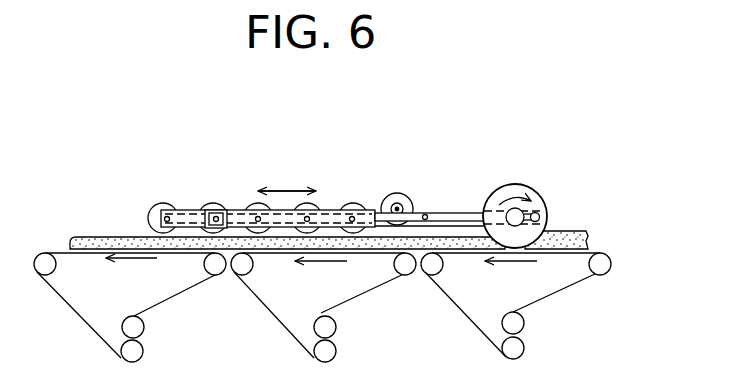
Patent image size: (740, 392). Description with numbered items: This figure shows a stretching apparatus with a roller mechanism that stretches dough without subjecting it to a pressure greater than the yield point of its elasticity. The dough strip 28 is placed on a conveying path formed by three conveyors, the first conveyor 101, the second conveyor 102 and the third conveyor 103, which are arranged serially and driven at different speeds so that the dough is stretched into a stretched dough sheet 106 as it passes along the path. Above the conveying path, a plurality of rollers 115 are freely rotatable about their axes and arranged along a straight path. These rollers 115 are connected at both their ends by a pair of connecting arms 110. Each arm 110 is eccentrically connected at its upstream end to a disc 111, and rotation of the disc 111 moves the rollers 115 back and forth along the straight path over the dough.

The dough strip 28 is at (572, 231).
The first conveyor 101 is at (558, 295).
The second conveyor 102 is at (373, 293).
The third conveyor 103 is at (175, 295).
The stretched dough sheet 106 is at (98, 237).
The connecting arms 110 is at (185, 210).
The disc 111 is at (510, 184).
The rollers 115 is at (348, 205).